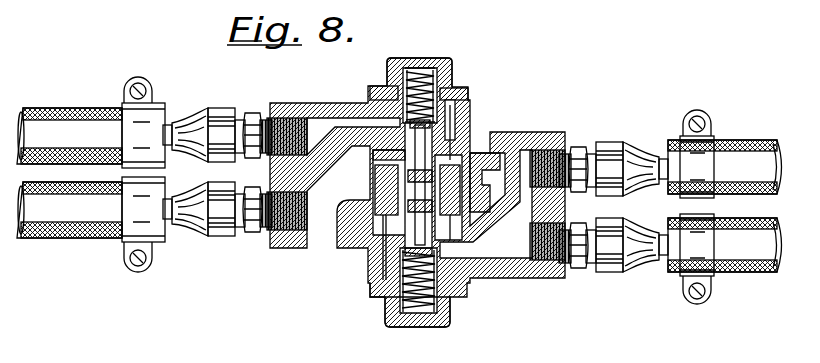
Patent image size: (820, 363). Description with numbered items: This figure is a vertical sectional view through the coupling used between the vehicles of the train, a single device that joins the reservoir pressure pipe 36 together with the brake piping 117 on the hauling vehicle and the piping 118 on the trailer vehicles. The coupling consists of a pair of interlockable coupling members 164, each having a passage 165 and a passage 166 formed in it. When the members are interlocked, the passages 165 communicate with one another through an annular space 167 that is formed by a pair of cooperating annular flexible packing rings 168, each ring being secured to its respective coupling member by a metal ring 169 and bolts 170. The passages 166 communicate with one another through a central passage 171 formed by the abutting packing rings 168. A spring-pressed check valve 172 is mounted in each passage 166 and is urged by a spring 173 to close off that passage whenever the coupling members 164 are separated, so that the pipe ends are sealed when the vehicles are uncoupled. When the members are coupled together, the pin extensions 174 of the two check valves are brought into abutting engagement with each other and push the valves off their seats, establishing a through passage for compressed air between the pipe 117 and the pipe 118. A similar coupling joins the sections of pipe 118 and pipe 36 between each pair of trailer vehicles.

The piping 117 is at (56, 127).
The reservoir pressure pipe 36 is at (68, 242).
The piping 118 is at (730, 275).
The passage 165 is at (300, 250).
The passage 166 is at (318, 122).
The coupling member 164 is at (330, 247).
The annular space 167 is at (478, 155).
The annular flexible packing ring 168 is at (470, 135).
The pin extension 174 is at (468, 120).
The central passage 171 is at (390, 117).
The spring 173 is at (430, 70).
The spring-pressed check valve 172 is at (455, 105).
The metal ring 169 is at (368, 240).
The bolt 170 is at (380, 283).